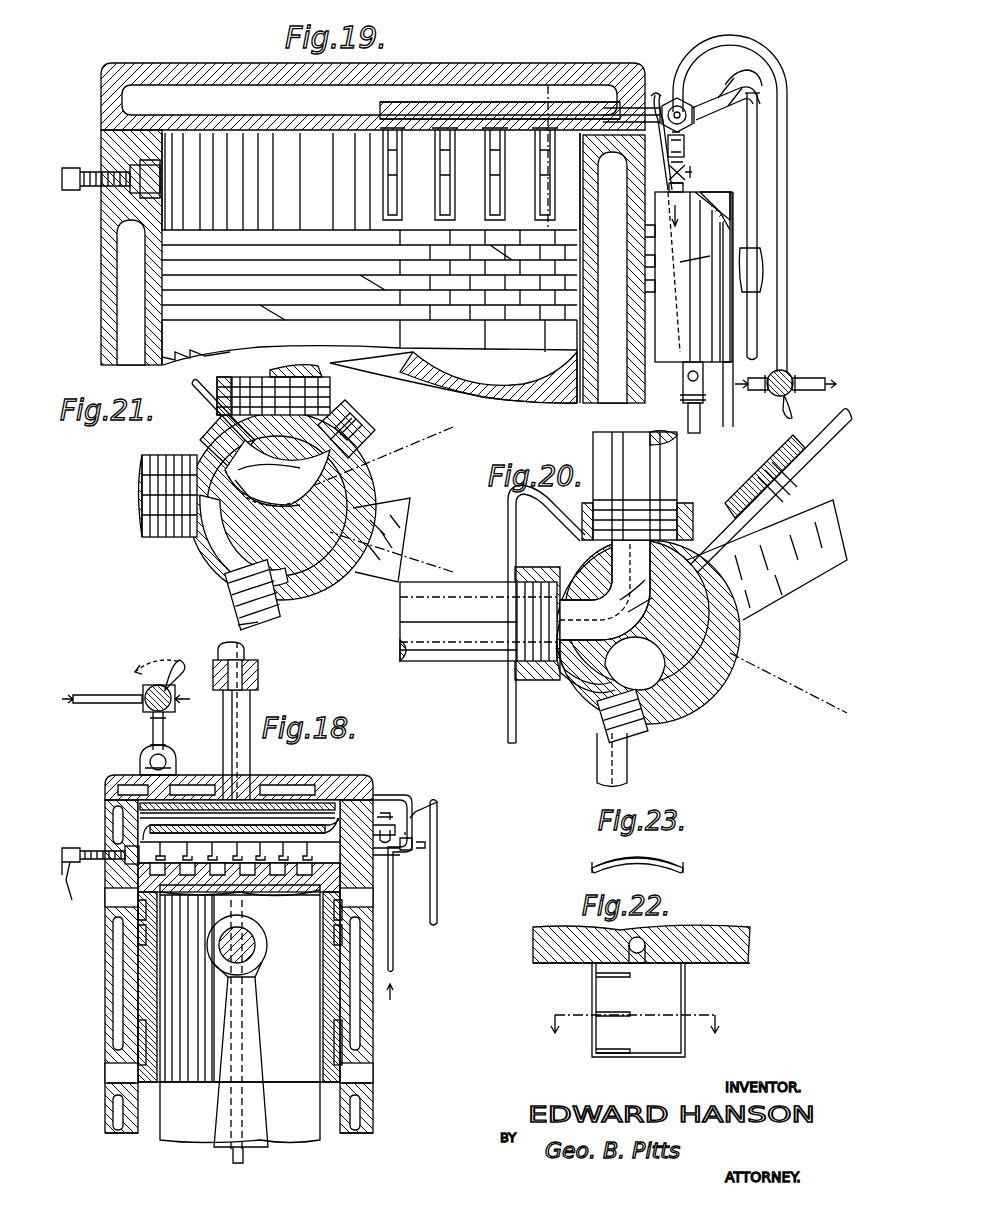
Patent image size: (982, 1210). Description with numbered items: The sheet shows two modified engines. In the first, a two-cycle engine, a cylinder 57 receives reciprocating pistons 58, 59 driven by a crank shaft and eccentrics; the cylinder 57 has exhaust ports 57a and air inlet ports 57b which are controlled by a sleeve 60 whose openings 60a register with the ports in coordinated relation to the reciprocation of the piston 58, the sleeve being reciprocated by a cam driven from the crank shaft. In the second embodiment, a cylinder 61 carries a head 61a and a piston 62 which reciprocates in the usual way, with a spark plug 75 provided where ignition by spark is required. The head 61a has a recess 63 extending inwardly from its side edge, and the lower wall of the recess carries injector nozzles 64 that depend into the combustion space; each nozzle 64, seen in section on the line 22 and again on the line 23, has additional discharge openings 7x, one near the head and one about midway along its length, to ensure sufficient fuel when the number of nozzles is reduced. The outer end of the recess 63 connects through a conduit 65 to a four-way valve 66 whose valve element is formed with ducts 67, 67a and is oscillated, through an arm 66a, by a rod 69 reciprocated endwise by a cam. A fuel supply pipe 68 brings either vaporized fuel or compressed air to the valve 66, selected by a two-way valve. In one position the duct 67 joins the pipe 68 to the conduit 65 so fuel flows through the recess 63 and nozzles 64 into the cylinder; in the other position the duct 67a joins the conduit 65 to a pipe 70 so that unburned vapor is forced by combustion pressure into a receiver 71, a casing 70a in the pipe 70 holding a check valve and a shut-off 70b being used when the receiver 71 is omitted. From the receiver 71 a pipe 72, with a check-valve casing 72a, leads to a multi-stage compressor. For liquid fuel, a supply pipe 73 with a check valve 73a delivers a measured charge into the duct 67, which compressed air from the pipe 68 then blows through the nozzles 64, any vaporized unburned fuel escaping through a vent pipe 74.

In FIG. 18, the cylinder 57 is at (374, 1118).
In FIG. 18, the exhaust ports 57a is at (396, 905).
In FIG. 18, the air inlet ports 57b is at (380, 1063).
In FIG. 18, the piston 58 is at (302, 1078).
In FIG. 18, the piston 59 is at (198, 790).
In FIG. 18, the sleeve 60 is at (330, 1122).
In FIG. 18, the openings 60a is at (93, 1032).
In FIG. 19, the cylinder 61 is at (104, 314).
In FIG. 19, the head 61a is at (249, 68).
In FIG. 22, the head 61a is at (742, 965).
In FIG. 19, the piston 62 is at (388, 348).
In FIG. 19, the recess 63 is at (380, 108).
In FIG. 22, the recess 63 is at (640, 940).
In FIG. 19, the injector or nozzle 64 is at (440, 198).
In FIG. 23, the injector or nozzle 64 is at (683, 858).
In FIG. 22, the injector or nozzle 64 is at (685, 1015).
In FIG. 19, the conduit 65 is at (625, 106).
In FIG. 21, the conduit 65 is at (142, 530).
In FIG. 20, the conduit 65 is at (448, 670).
In FIG. 19, the four-way valve 66 is at (692, 118).
In FIG. 21, the four-way valve 66 is at (310, 585).
In FIG. 20, the four-way valve 66 is at (705, 688).
In FIG. 21, the arm 66a is at (385, 508).
In FIG. 20, the arm 66a is at (760, 590).
In FIG. 21, the duct 67 is at (352, 437).
In FIG. 20, the duct 67 is at (560, 690).
In FIG. 21, the duct 67a is at (222, 580).
In FIG. 20, the duct 67a is at (672, 722).
In FIG. 19, the fuel supply pipe 68 is at (780, 262).
In FIG. 21, the fuel supply pipe 68 is at (320, 375).
In FIG. 20, the fuel supply pipe 68 is at (678, 505).
In FIG. 19, the rod 69 is at (758, 190).
In FIG. 19, the pipe 70 is at (688, 186).
In FIG. 21, the pipe 70 is at (262, 620).
In FIG. 20, the pipe 70 is at (628, 768).
In FIG. 19, the casing 70a is at (690, 148).
In FIG. 19, the shut-off 70b is at (690, 172).
In FIG. 19, the receiver 71 is at (676, 355).
In FIG. 19, the pipe 72 is at (700, 425).
In FIG. 19, the casing 72a is at (683, 393).
In FIG. 21, the supply pipe 73 is at (358, 413).
In FIG. 20, the supply pipe 73 is at (820, 432).
In FIG. 20, the check valve 73a is at (766, 482).
In FIG. 19, the vent or discharge pipe 74 is at (657, 92).
In FIG. 21, the vent or discharge pipe 74 is at (192, 395).
In FIG. 20, the vent or discharge pipe 74 is at (515, 575).
In FIG. 19, the spark plug 75 is at (92, 196).
In FIG. 19, the discharge openings 7x is at (494, 180).
In FIG. 23, the discharge openings 7x is at (592, 862).
In FIG. 22, the discharge openings 7x is at (620, 992).
In FIG. 19, the section line 22 is at (551, 229).
In FIG. 22, the section line 23 is at (636, 1040).